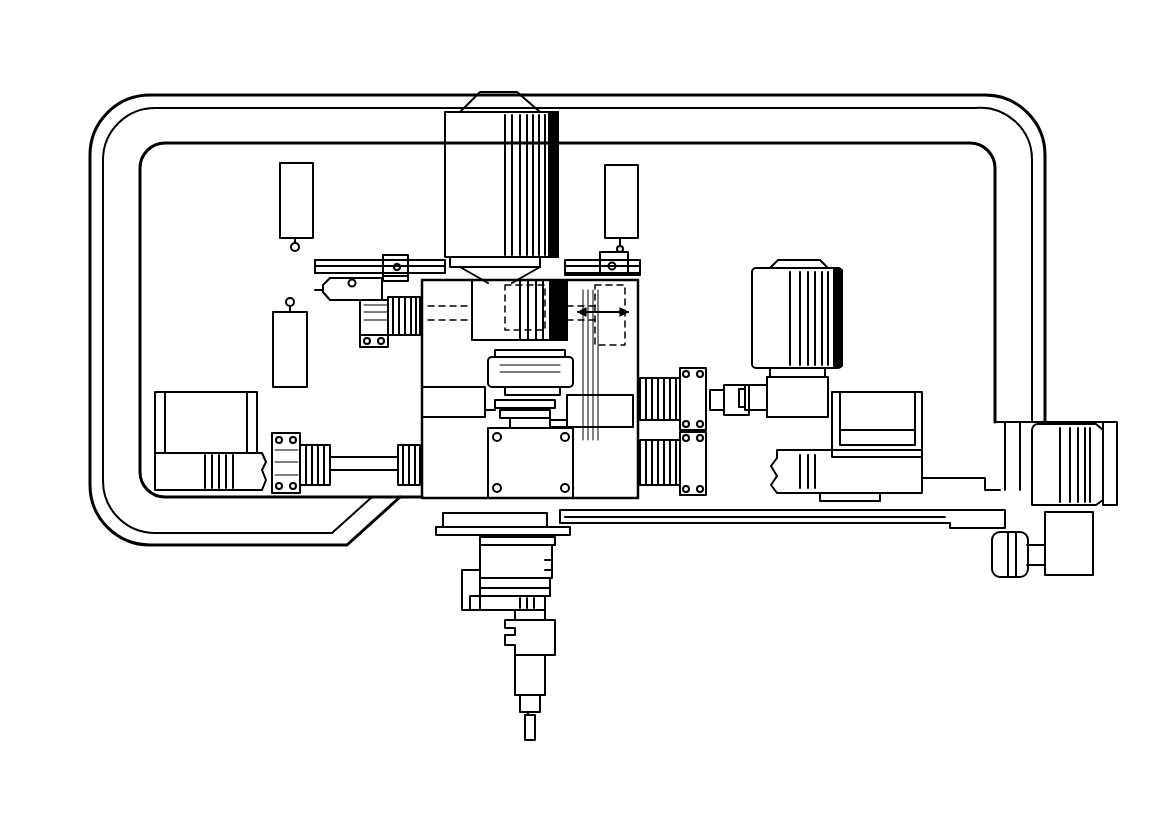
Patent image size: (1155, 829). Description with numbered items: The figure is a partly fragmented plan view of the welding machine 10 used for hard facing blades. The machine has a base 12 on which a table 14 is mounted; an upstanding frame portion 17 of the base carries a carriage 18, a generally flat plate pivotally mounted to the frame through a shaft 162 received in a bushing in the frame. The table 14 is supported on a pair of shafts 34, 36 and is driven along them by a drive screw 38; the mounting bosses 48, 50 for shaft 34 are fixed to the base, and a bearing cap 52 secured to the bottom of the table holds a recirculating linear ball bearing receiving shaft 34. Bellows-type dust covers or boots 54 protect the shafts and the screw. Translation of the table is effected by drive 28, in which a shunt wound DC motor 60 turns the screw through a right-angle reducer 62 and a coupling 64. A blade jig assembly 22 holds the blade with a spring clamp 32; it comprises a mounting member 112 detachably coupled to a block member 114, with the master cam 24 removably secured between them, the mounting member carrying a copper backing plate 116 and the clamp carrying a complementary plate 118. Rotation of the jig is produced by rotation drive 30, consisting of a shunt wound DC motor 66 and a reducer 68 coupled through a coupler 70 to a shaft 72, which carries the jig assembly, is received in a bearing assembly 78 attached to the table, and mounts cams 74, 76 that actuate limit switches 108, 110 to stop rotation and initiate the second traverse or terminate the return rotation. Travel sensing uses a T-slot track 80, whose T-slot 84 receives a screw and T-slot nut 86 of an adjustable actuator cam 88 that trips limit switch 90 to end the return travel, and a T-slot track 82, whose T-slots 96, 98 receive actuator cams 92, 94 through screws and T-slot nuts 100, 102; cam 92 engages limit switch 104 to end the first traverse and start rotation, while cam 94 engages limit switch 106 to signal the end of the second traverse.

The welding machine 10 is at (938, 74).
The base 12 is at (980, 224).
The table 14 is at (569, 389).
The upstanding frame portion 17 is at (215, 455).
The carriage 18 is at (905, 522).
The blade jig assembly 22 is at (548, 568).
The master cam 24 is at (556, 546).
The drive 28 is at (828, 338).
The rotation drive 30 is at (529, 187).
The spring clamp 32 is at (548, 680).
The shaft 34 is at (441, 337).
The shaft 36 is at (370, 460).
The drive screw 38 is at (666, 346).
The mounting boss 48 is at (360, 335).
The mounting boss 50 is at (630, 332).
The bearing cap 52 is at (522, 263).
The dust covers or boots 54 is at (410, 336).
The shunt wound DC motor 60 is at (845, 293).
The right-angle reducer 62 is at (810, 387).
The coupling 64 is at (737, 412).
The shunt wound DC motor 66 is at (562, 135).
The reducer 68 is at (485, 342).
The coupler 70 is at (572, 372).
The shaft 72 is at (505, 420).
The cam 74 is at (538, 438).
The cam 76 is at (515, 408).
The bearing assembly 78 is at (505, 470).
The T-slot track 80 is at (645, 276).
The T-slot track 82 is at (322, 290).
The T-slot 84 is at (632, 270).
The screw and T-slot nut 86 is at (616, 265).
The actuator cam 88 is at (600, 255).
The limit switch 90 is at (628, 175).
The actuator cam 92 is at (348, 292).
The actuator cam 94 is at (397, 256).
The T-slot 96 is at (408, 279).
The T-slot 98 is at (328, 262).
The screw and T-slot nut 100 is at (352, 279).
The screw and T-slot nut 102 is at (393, 264).
The limit switch 104 is at (285, 340).
The limit switch 106 is at (278, 178).
The limit switch 108 is at (600, 411).
The limit switch 110 is at (453, 402).
The mounting member 112 is at (495, 560).
The block member 114 is at (485, 541).
The copper backing plate 116 is at (552, 582).
The complementary plate 118 is at (553, 597).
The shaft 162 is at (885, 492).